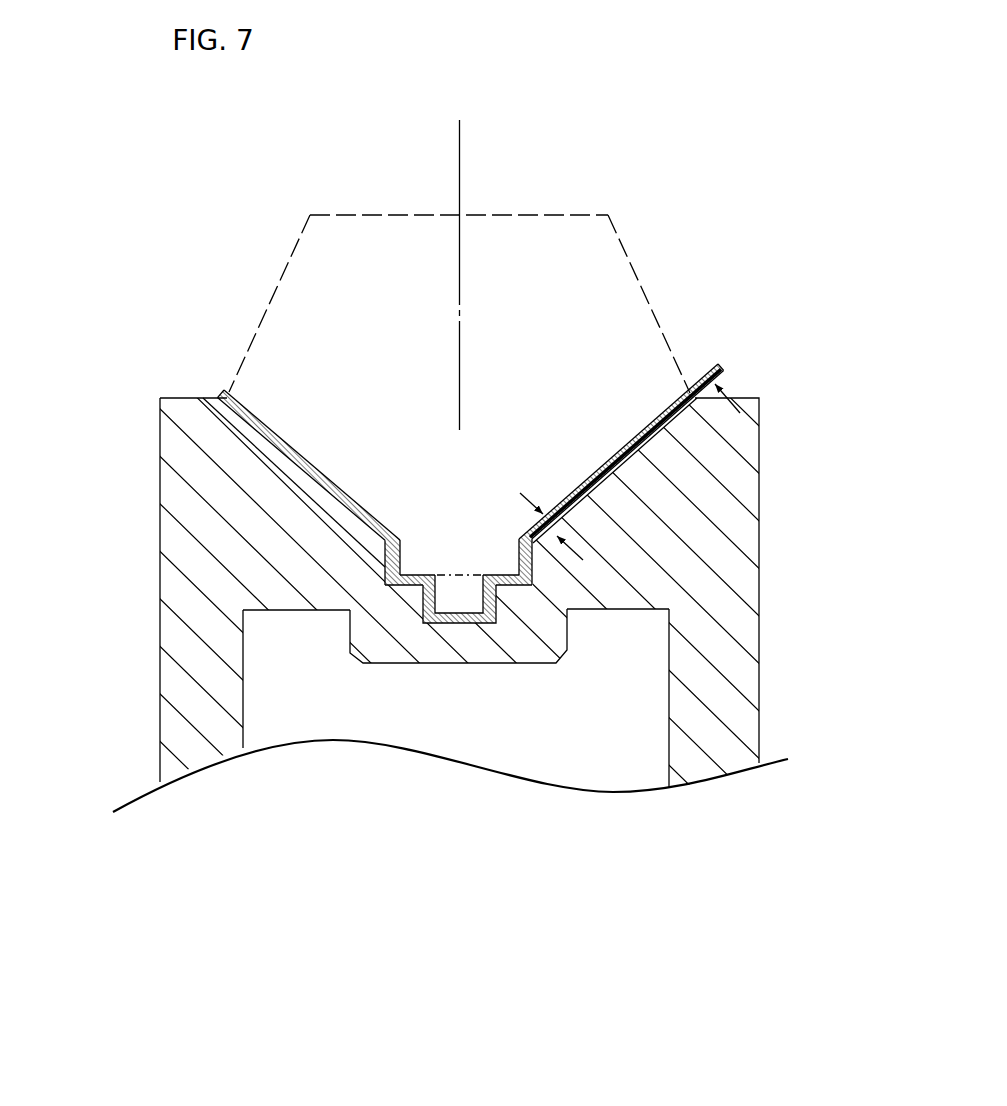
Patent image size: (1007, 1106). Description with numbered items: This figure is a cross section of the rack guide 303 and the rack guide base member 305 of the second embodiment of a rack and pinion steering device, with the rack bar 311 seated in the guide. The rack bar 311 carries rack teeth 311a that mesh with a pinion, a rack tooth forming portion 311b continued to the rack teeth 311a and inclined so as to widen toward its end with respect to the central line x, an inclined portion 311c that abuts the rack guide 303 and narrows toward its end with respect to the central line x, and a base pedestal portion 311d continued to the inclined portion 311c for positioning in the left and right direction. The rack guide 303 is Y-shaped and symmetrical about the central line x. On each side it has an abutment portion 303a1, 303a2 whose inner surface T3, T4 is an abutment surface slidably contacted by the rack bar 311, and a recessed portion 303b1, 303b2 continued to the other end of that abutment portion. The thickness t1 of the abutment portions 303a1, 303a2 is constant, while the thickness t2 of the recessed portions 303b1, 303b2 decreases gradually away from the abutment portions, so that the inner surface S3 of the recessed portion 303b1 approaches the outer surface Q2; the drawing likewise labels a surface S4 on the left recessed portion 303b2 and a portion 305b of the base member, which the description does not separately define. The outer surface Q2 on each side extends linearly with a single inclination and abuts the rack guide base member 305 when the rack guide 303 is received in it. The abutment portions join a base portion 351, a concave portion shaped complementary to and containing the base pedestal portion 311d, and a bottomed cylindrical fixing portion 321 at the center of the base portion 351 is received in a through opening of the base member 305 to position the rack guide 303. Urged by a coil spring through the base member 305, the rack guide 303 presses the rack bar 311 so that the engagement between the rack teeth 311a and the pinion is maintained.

The rack guide base member 305 is at (717, 742).
The housing top surface 305b is at (300, 494).
The rack guide 303 is at (667, 478).
The abutment portion 303a1 is at (631, 537).
The abutment portion 303a2 is at (305, 523).
The recessed portion 303b1 is at (685, 425).
The recessed portion 303b2 is at (228, 440).
The rack bar 311 is at (615, 305).
The rack teeth 311a is at (387, 217).
The rack tooth forming portion 311b is at (290, 262).
The inclined portion 311c is at (298, 466).
The base pedestal portion 311d is at (500, 557).
The base portion 351 is at (422, 549).
The fixing portion 321 is at (452, 588).
The inner surface T3 is at (588, 478).
The inner surface T4 is at (338, 486).
The inner surface S3 is at (680, 352).
The second contact surface S4 is at (226, 392).
The thickness t1 is at (520, 493).
The thickness t2 is at (740, 413).
The outer surface Q2 is at (583, 560).
The central line x is at (460, 192).